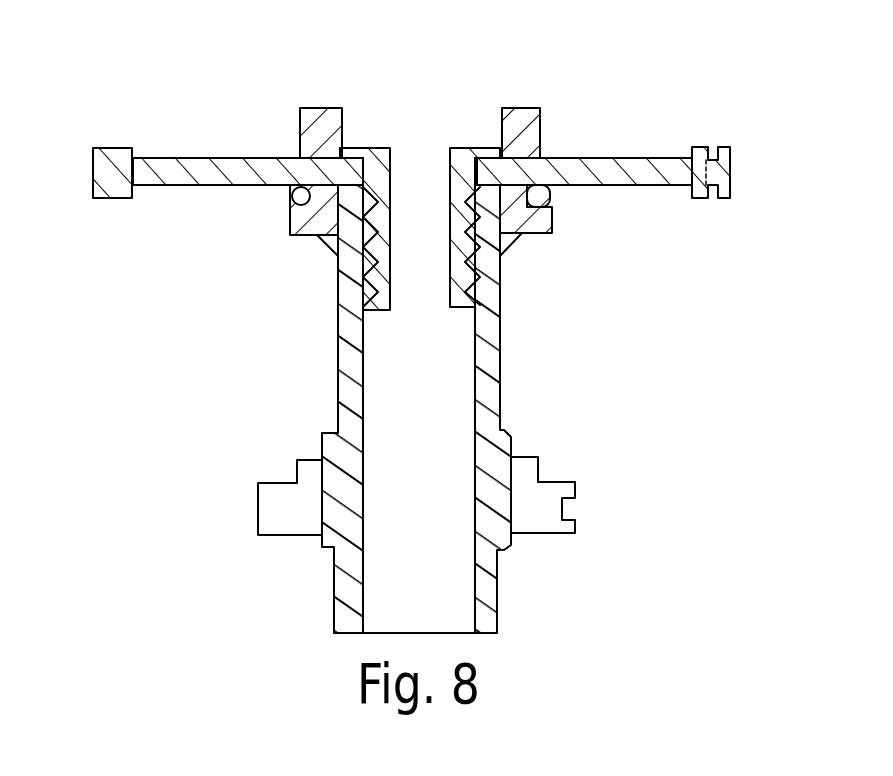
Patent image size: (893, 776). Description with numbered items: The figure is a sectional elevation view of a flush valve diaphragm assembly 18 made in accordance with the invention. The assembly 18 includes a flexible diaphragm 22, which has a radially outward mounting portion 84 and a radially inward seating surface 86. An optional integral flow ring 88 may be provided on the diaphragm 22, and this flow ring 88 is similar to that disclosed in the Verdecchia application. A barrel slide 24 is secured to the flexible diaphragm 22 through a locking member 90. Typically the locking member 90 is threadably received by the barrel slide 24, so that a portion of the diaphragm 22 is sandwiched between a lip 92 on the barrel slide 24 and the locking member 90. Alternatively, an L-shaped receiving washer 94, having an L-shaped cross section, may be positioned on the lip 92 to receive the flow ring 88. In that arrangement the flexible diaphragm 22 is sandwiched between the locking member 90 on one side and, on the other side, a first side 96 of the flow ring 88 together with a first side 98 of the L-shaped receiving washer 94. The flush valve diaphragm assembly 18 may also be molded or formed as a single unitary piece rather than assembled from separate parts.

The flush valve diaphragm assembly 18 is at (569, 350).
The flexible diaphragm 22 is at (653, 157).
The barrel slide 24 is at (338, 360).
The radially outward mounting portion 84 is at (118, 147).
The radially inward seating surface 86 is at (352, 226).
The integral flow ring 88 is at (306, 190).
The locking member 90 is at (555, 70).
The lip 92 is at (528, 237).
The L-shaped receiving washer 94 is at (492, 158).
The first side of flow ring 96 is at (547, 186).
The first side of L-shaped receiving washer 98 is at (331, 160).